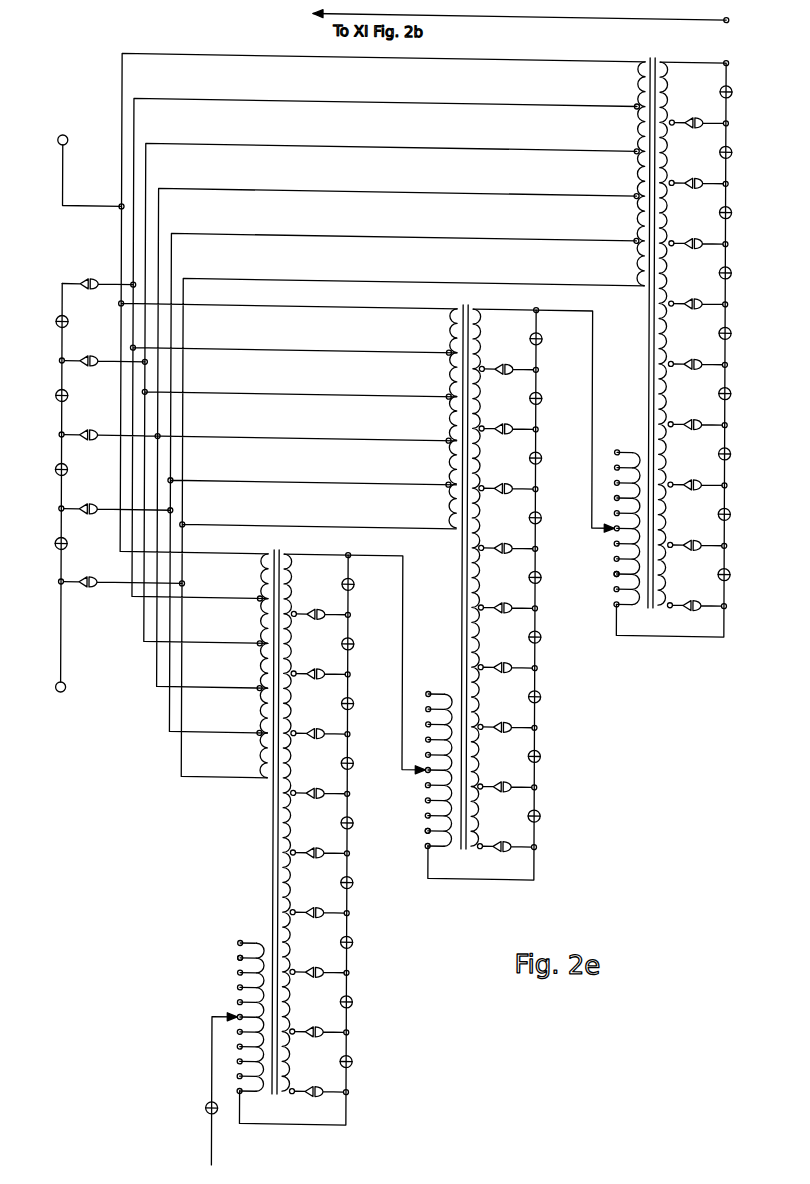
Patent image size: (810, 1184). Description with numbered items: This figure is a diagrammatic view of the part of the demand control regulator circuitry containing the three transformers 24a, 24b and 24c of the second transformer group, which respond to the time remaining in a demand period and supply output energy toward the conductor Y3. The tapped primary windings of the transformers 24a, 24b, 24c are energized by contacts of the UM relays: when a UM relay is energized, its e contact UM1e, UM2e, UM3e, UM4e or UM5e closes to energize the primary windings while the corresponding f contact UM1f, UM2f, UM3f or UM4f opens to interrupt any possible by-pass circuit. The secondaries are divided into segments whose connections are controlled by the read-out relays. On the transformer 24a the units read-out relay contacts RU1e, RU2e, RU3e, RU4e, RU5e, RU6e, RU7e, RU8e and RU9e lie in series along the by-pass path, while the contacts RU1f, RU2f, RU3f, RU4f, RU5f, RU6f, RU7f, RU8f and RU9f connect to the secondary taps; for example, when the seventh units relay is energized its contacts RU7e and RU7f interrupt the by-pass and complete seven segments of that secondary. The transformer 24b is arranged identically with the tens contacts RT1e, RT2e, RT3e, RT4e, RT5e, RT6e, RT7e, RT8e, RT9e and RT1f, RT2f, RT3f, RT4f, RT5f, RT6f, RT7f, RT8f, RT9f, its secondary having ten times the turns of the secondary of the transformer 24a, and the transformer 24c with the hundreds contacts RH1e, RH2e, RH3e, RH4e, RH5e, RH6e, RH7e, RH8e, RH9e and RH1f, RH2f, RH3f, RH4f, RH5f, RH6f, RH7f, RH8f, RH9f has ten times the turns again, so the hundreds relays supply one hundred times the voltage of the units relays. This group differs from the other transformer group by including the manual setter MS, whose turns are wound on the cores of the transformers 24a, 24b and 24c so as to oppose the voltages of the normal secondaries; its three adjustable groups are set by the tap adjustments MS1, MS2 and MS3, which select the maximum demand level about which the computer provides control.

The transformer 24a is at (648, 54).
The transformer 24b is at (467, 303).
The transformer 24c is at (278, 550).
The manual tap setting adjustment MS1 is at (605, 527).
The manual tap setting adjustment MS2 is at (408, 774).
The manual tap setting adjustment MS3 is at (214, 1019).
The manual setter MS is at (239, 960).
The conductor Y3 is at (207, 1109).
The contact UM1e is at (87, 596).
The contact UM2e is at (95, 502).
The contact UM3e is at (95, 428).
The contact UM4e is at (95, 354).
The contact UM5e is at (95, 277).
The contact UM1f is at (56, 545).
The contact UM2f is at (56, 471).
The contact UM3f is at (56, 397).
The contact UM4f is at (56, 323).
The contact RU1e is at (735, 77).
The contact RU2e is at (735, 137).
The contact RU3e is at (735, 198).
The contact RU4e is at (735, 258).
The contact RU5e is at (735, 318).
The contact RU6e is at (735, 378).
The contact RU7e is at (735, 439).
The contact RU8e is at (735, 499).
The contact RU9e is at (735, 560).
The contact RU1f is at (686, 112).
The contact RU2f is at (686, 173).
The contact RU3f is at (686, 233).
The contact RU4f is at (686, 293).
The contact RU5f is at (686, 354).
The contact RU6f is at (686, 414).
The contact RU7f is at (686, 474).
The contact RU8f is at (686, 535).
The contact RU9f is at (686, 595).
The contact RT1e is at (546, 327).
The contact RT2e is at (546, 386).
The contact RT3e is at (546, 446).
The contact RT4e is at (546, 506).
The contact RT5e is at (546, 565).
The contact RT6e is at (546, 625).
The contact RT7e is at (546, 685).
The contact RT8e is at (546, 744).
The contact RT9e is at (546, 804).
The contact RT1f is at (497, 362).
The contact RT2f is at (497, 421).
The contact RT3f is at (497, 481).
The contact RT4f is at (497, 541).
The contact RT5f is at (497, 600).
The contact RT6f is at (497, 660).
The contact RT7f is at (497, 720).
The contact RT8f is at (497, 779).
The contact RT9f is at (497, 839).
The contact RH1e is at (359, 575).
The contact RH2e is at (359, 635).
The contact RH3e is at (359, 694).
The contact RH4e is at (359, 754).
The contact RH5e is at (359, 814).
The contact RH6e is at (359, 874).
The contact RH7e is at (359, 933).
The contact RH8e is at (359, 993).
The contact RH9e is at (359, 1052).
The contact RH1f is at (310, 610).
The contact RH2f is at (310, 669).
The contact RH3f is at (310, 729).
The contact RH4f is at (310, 789).
The contact RH5f is at (310, 848).
The contact RH6f is at (310, 908).
The contact RH7f is at (310, 968).
The contact RH8f is at (310, 1027).
The contact RH9f is at (310, 1087).